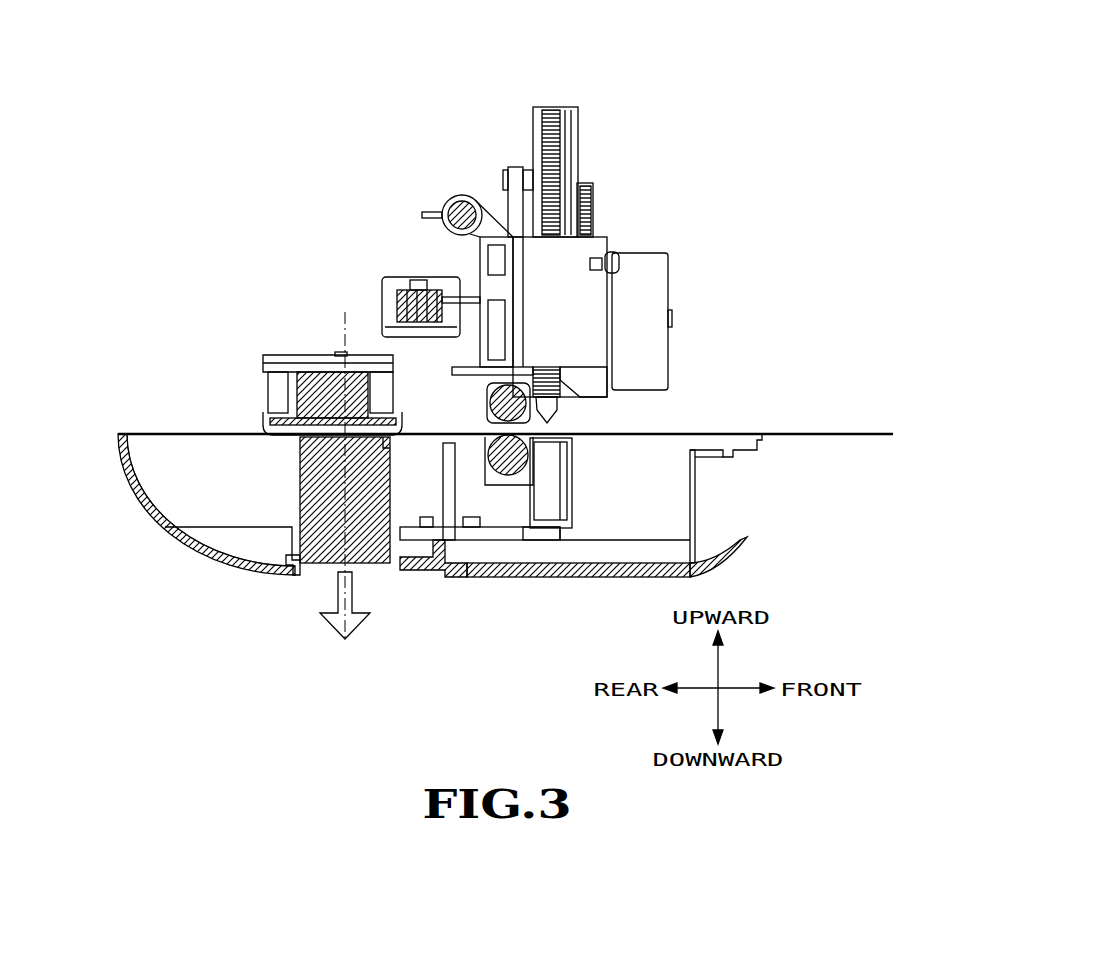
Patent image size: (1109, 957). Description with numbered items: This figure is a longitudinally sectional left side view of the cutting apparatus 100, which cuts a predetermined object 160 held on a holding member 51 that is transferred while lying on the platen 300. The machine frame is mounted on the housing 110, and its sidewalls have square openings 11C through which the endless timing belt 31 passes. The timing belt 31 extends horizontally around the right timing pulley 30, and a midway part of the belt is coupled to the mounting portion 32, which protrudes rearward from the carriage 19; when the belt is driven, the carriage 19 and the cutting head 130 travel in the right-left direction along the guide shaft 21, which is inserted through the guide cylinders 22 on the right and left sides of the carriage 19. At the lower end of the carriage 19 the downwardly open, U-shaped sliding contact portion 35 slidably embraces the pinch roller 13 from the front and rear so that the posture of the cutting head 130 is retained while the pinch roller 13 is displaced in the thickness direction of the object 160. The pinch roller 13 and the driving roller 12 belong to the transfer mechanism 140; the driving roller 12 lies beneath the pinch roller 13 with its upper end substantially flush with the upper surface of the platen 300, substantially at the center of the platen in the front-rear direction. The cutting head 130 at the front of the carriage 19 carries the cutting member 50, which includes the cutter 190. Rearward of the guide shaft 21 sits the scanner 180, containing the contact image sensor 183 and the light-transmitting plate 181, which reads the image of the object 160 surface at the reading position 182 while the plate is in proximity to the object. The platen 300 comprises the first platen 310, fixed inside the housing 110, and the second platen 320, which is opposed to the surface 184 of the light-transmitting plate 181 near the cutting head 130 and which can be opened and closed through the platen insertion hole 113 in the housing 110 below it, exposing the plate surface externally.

The cutting apparatus 100 is at (608, 259).
The cutting head 130 is at (676, 253).
The carriage 19 is at (507, 233).
The guide shaft 21 is at (448, 200).
The guide cylinders 22 is at (425, 213).
The opening 11C is at (413, 300).
The mounting portion 32 is at (430, 292).
The timing belt 31 is at (454, 297).
The right timing pulley 30 is at (418, 335).
The reading position 182 is at (330, 328).
The scanner 180 is at (275, 353).
The contact image sensor (CIS) 183 is at (298, 378).
The light-transmitting plate 181 is at (280, 432).
The holding member 51 is at (198, 430).
The object 160 is at (235, 432).
The sliding contact portion 35 is at (488, 402).
The pinch roller 13 is at (490, 415).
The cutting member 50 is at (560, 380).
The cutter 190 is at (560, 421).
The transfer mechanism 140 is at (542, 448).
The driving roller 12 is at (540, 466).
The platen 300 is at (710, 472).
The first platen 310 is at (160, 482).
The housing 110 is at (222, 570).
The platen insertion hole 113 is at (296, 572).
The surface 184 is at (388, 448).
The second platen 320 is at (390, 565).